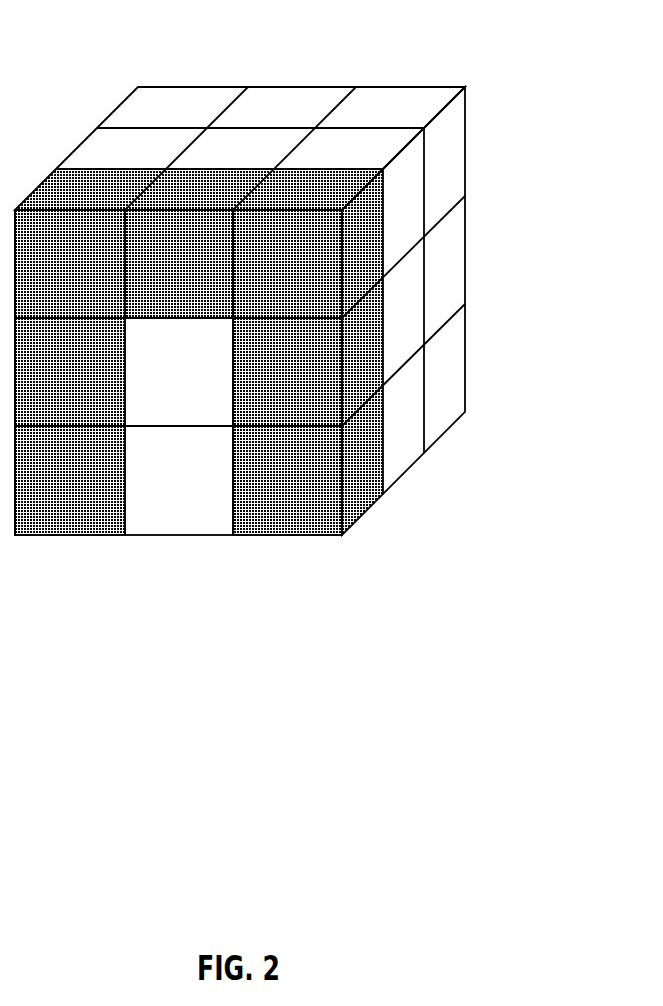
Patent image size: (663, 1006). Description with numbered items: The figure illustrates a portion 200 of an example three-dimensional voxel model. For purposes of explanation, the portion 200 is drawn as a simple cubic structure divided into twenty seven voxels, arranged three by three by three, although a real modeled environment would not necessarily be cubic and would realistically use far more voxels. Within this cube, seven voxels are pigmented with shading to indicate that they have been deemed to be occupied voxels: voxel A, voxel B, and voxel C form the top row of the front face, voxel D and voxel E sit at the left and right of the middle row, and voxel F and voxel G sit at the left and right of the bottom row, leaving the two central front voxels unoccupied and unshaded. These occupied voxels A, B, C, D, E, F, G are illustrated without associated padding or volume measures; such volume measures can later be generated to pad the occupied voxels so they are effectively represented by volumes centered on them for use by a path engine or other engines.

The portion of a 3D voxel model 200 is at (510, 86).
The occupied voxel A is at (70, 264).
The occupied voxel B is at (179, 264).
The occupied voxel C is at (287, 264).
The occupied voxel D is at (70, 372).
The occupied voxel E is at (287, 372).
The occupied voxel F is at (70, 480).
The occupied voxel G is at (287, 480).